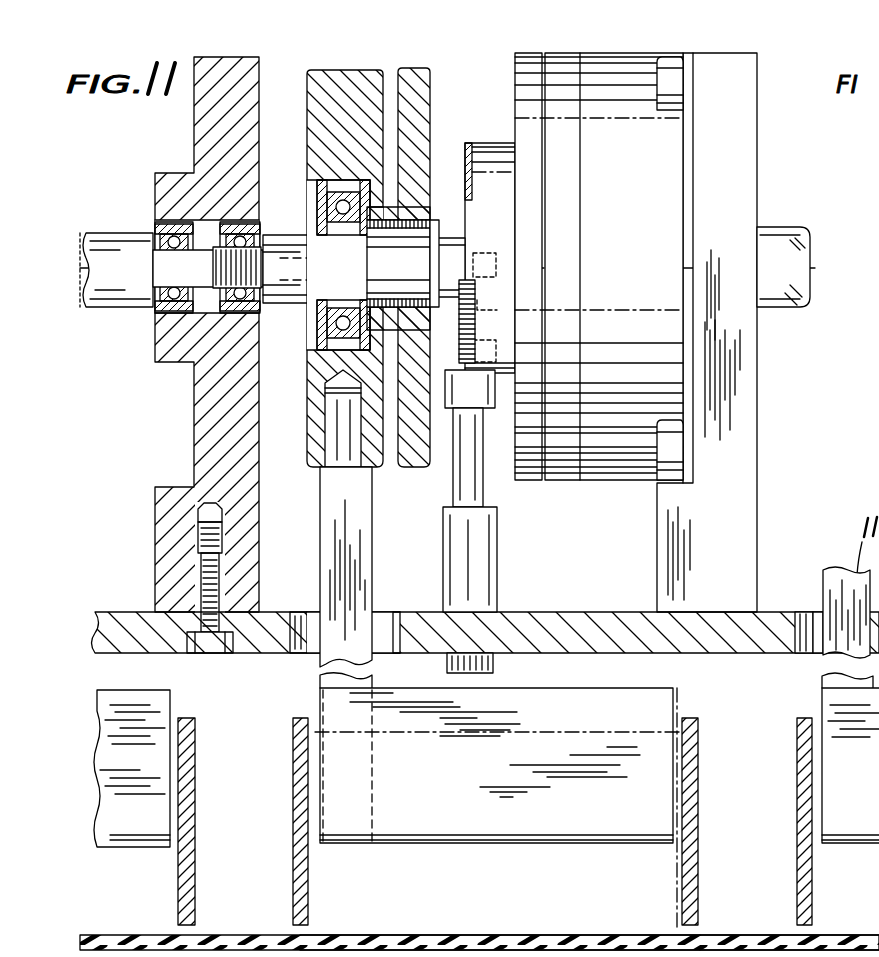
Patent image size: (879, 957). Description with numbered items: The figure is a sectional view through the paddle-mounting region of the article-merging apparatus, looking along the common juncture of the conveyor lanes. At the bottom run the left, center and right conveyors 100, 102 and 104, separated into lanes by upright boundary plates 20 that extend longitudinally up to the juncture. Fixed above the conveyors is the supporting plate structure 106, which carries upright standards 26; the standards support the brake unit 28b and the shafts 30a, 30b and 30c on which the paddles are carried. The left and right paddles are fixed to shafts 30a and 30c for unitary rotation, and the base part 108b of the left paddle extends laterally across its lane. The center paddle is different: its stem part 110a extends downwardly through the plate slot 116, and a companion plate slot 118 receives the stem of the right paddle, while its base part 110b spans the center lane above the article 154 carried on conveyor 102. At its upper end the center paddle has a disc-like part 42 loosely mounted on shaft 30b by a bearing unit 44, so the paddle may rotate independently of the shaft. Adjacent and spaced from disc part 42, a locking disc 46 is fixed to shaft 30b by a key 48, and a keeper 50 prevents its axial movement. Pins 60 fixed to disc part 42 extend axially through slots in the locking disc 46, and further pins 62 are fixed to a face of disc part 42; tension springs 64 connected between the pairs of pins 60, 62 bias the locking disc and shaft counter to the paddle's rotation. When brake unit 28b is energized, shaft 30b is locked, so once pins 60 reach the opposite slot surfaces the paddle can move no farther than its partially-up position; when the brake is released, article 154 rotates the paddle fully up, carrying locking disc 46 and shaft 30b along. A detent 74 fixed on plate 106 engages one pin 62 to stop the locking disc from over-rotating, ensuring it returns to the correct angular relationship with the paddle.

The boundary plate 20 is at (293, 805).
The upright standard 26 is at (210, 428).
The brake unit 28b is at (605, 490).
The shaft 30a is at (114, 247).
The shaft 30b is at (289, 303).
The shaft 30c is at (783, 232).
The disc-like part 42 is at (312, 90).
The bearing unit 44 is at (306, 201).
The locking disc 46 is at (408, 82).
The key 48 is at (410, 220).
The keeper 50 is at (440, 222).
The pin 60 is at (488, 250).
The pin 62 is at (510, 349).
The tension spring 64 is at (477, 310).
The detent 74 is at (455, 397).
The left conveyor 100 is at (112, 932).
The center conveyor 102 is at (492, 932).
The right conveyor 104 is at (865, 932).
The supporting plate structure 106 is at (528, 620).
The base part 108b is at (165, 708).
The stem part 110a is at (365, 563).
The base part 110b is at (660, 695).
The plate slot 116 is at (306, 620).
The plate slot 118 is at (808, 614).
The article 154 is at (545, 745).